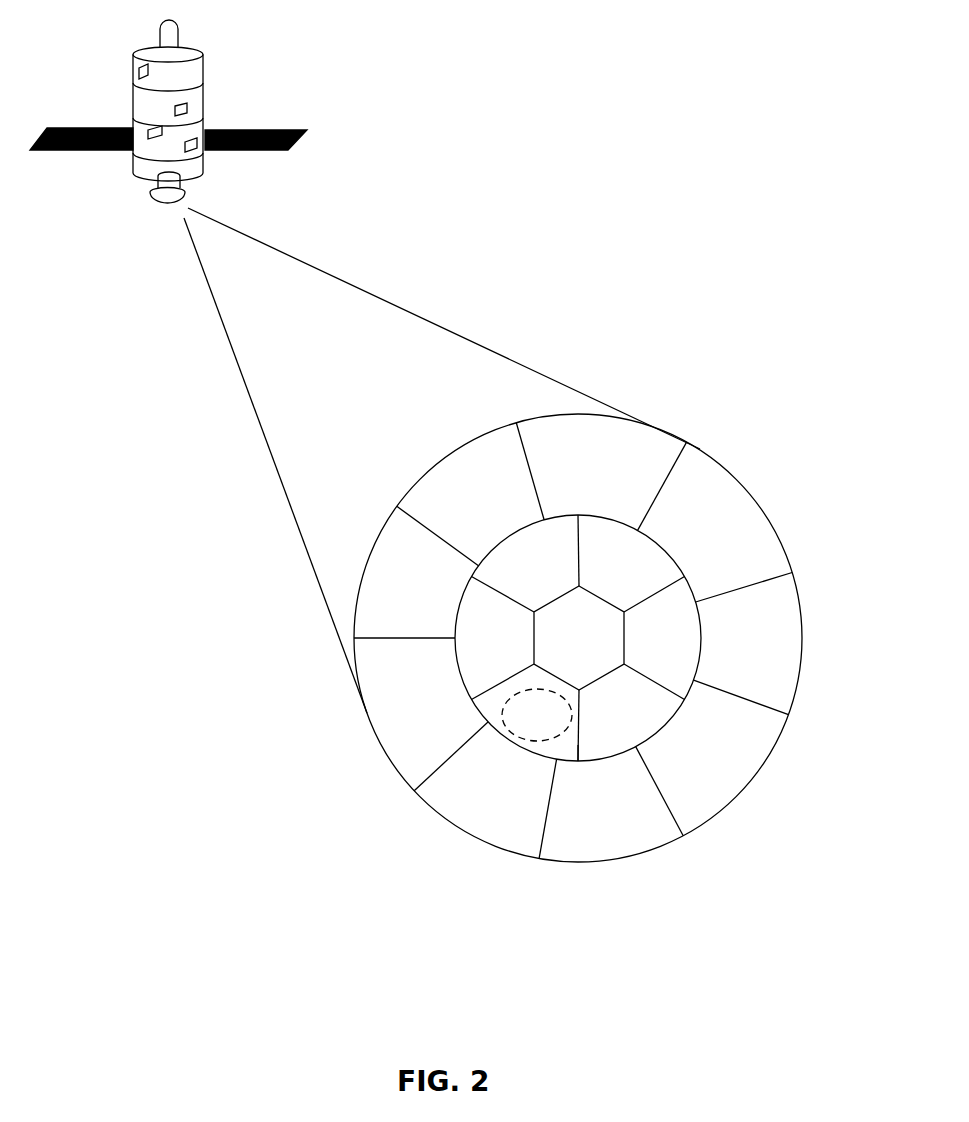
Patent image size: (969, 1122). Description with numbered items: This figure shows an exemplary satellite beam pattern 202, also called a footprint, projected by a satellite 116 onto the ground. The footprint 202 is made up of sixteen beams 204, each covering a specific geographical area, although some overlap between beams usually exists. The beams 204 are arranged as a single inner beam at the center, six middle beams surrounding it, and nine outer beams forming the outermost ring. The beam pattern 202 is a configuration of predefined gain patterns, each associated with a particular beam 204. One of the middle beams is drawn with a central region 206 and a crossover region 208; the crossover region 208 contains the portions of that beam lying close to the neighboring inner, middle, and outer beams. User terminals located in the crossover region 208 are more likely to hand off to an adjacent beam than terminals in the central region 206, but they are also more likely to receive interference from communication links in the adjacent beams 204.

The satellite 116 is at (133, 77).
The satellite beam pattern 202 is at (782, 542).
The beam 204 is at (573, 641).
The central region 206 is at (522, 727).
The crossover region 208 is at (573, 745).